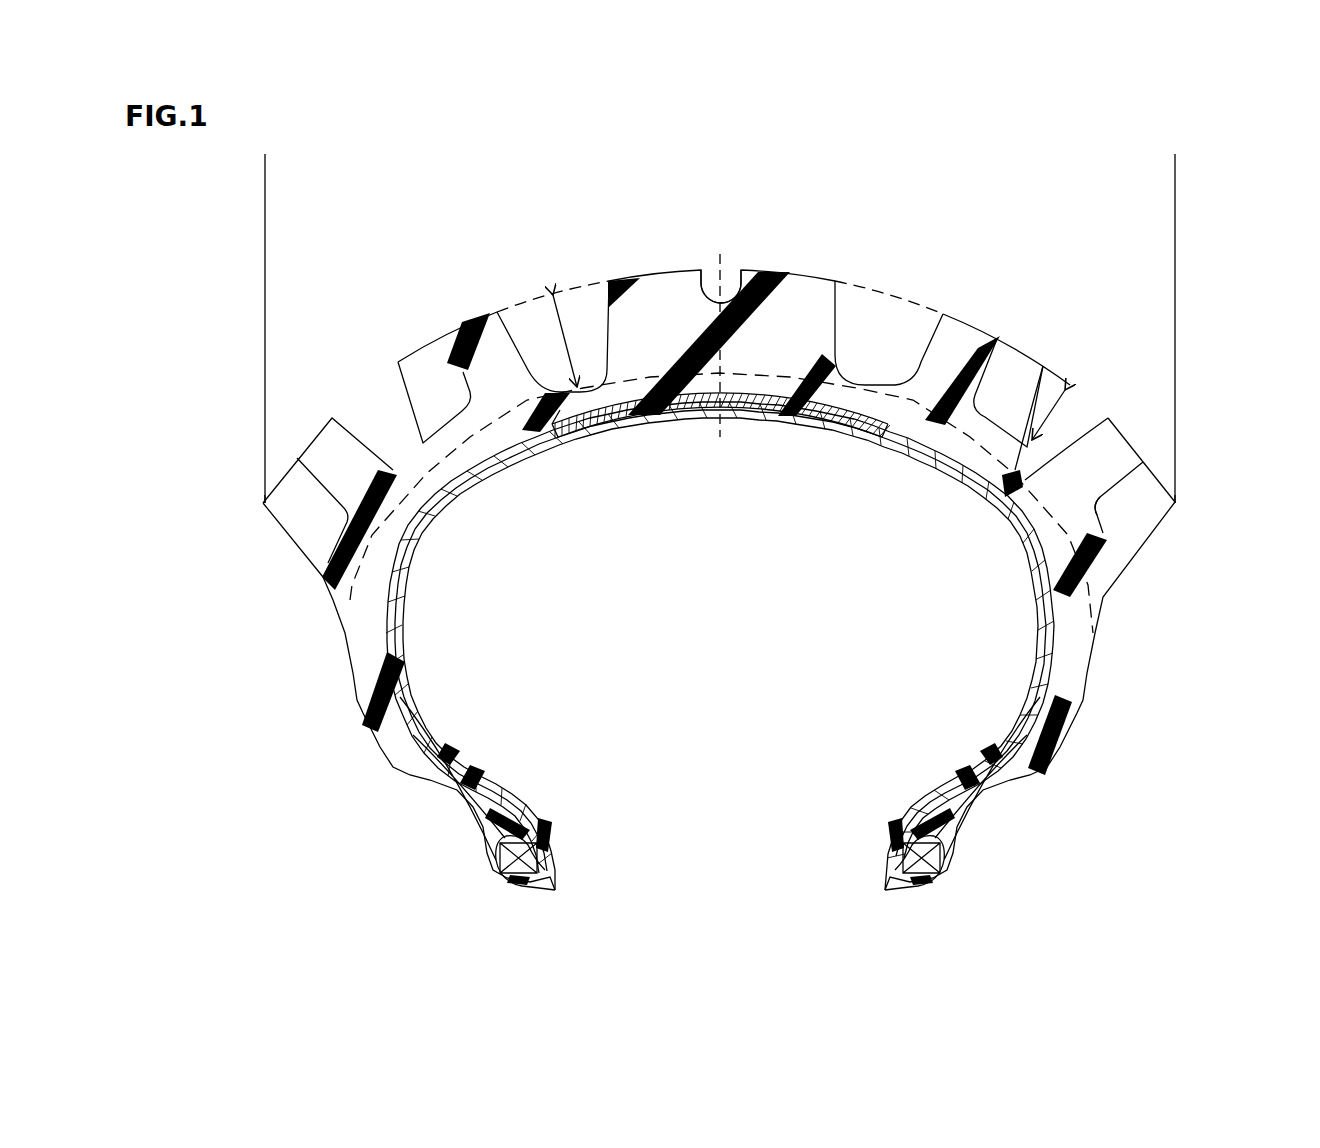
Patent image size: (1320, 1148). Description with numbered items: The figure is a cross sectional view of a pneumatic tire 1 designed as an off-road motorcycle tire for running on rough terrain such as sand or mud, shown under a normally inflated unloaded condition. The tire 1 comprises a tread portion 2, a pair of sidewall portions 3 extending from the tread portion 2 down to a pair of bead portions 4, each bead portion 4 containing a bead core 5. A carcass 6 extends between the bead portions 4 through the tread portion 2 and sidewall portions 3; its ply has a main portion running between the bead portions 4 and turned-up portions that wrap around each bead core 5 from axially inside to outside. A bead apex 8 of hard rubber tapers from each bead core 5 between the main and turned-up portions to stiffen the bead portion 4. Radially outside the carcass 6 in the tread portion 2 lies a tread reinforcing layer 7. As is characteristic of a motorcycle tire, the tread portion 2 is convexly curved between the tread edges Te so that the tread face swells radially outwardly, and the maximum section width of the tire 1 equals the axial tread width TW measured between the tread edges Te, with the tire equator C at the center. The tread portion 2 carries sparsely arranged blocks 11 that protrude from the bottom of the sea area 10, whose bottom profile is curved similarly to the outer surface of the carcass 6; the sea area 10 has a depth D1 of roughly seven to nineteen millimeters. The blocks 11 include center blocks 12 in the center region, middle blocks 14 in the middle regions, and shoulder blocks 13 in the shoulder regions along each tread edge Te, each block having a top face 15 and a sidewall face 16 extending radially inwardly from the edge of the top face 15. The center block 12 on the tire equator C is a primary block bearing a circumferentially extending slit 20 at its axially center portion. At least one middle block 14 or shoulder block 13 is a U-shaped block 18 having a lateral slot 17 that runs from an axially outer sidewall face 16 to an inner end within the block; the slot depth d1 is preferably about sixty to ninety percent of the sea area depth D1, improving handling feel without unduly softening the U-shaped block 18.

The pneumatic tire 1 is at (1205, 238).
The tread portion 2 is at (1025, 340).
The sidewall portion 3 is at (1095, 667).
The bead portion 4 is at (560, 850).
The bead core 5 is at (507, 860).
The carcass 6 is at (280, 740).
The tread reinforcing layer 7 is at (765, 398).
The bead apex 8 is at (510, 807).
The sea area 10 is at (638, 372).
The block 11 is at (455, 212).
The center block 12 is at (640, 267).
The shoulder block 13 is at (316, 412).
The middle block 14 is at (433, 330).
The top face 15 is at (297, 458).
The sidewall face 16 is at (362, 438).
The lateral slot 17 is at (1100, 520).
The U-shaped block 18 is at (1157, 440).
The slit 20 is at (729, 266).
The tread width TW is at (1175, 154).
The tread edge Te is at (265, 335).
The tire equator C is at (721, 334).
The depth of the sea area D1 is at (575, 341).
The depth of the lateral slot d1 is at (1048, 415).